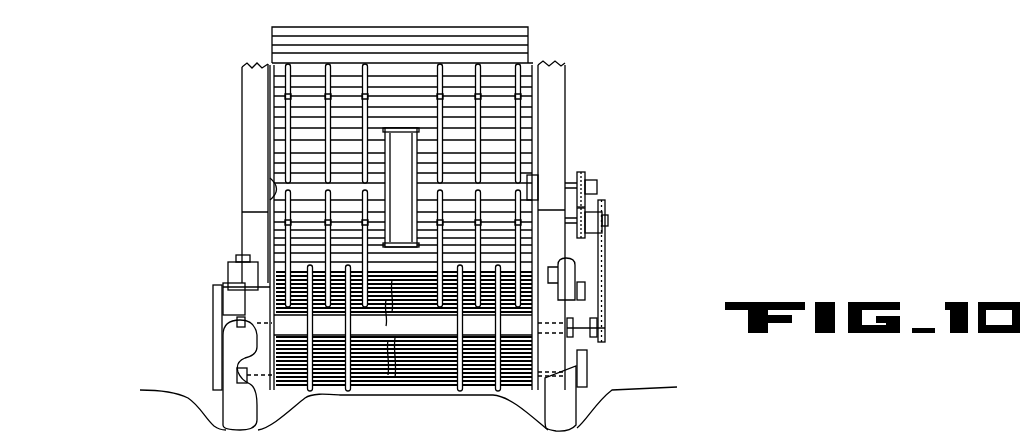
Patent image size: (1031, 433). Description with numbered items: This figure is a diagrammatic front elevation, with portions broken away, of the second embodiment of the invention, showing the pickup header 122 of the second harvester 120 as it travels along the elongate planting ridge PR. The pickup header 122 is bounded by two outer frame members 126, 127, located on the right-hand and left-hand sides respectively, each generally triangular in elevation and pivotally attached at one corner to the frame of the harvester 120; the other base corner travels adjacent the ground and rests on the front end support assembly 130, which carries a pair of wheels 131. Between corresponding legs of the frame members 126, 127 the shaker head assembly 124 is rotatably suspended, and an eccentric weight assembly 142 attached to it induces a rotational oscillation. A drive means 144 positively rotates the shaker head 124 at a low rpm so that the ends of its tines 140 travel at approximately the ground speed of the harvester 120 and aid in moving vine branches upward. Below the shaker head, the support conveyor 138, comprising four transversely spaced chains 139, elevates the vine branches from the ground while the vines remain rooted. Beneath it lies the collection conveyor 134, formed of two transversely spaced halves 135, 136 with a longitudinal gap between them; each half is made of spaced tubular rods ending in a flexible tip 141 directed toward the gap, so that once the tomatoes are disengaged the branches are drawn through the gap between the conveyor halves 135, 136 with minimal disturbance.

The second harvester 120 is at (594, 76).
The pickup header 122 is at (566, 152).
The shaker head assembly 124 is at (521, 112).
The outer frame member 126 is at (242, 173).
The outer frame member 127 is at (558, 121).
The front end support assembly 130 is at (214, 337).
The wheels 131 is at (231, 352).
The collection conveyor 134 is at (423, 385).
The conveyor half 135 is at (278, 283).
The conveyor half 136 is at (535, 358).
The support conveyor 138 is at (304, 324).
The chains 139 is at (310, 391).
The tines 140 is at (290, 112).
The flexible tip 141 is at (390, 296).
The eccentric weight assembly 142 is at (393, 172).
The drive means 144 is at (606, 239).
The planting ridge PR is at (598, 409).